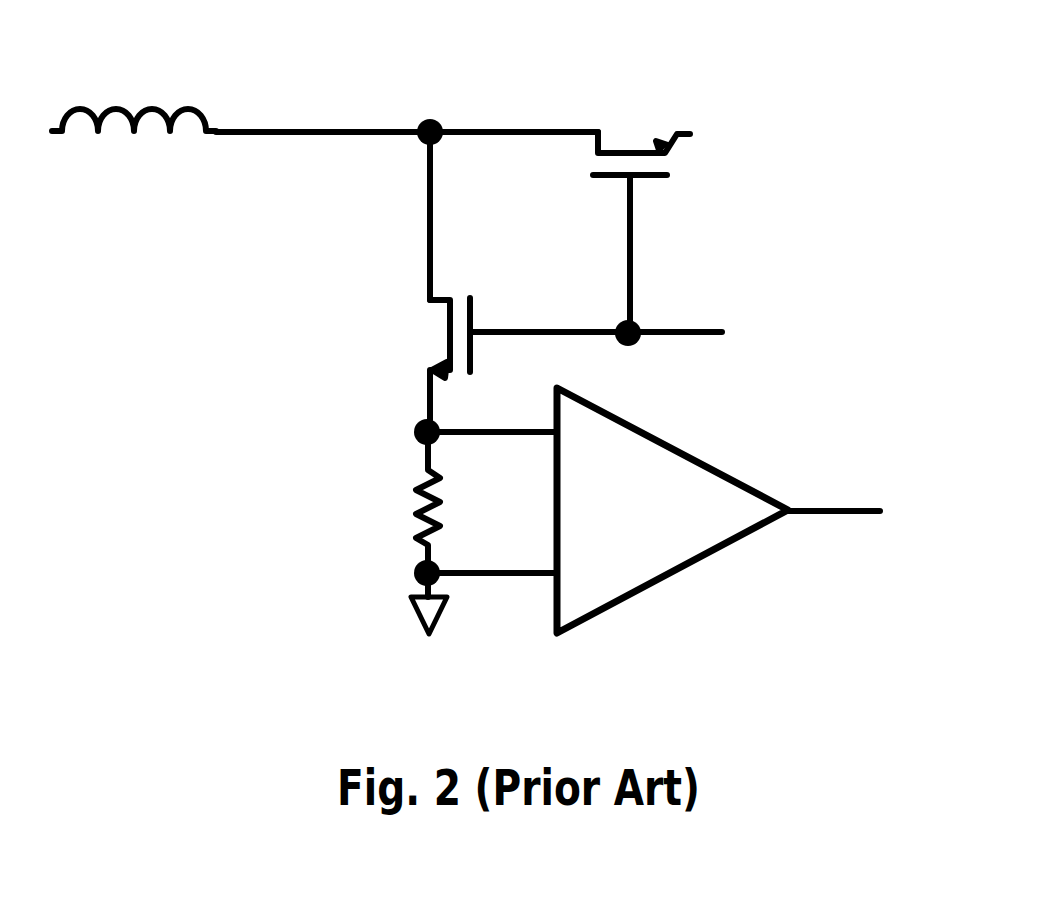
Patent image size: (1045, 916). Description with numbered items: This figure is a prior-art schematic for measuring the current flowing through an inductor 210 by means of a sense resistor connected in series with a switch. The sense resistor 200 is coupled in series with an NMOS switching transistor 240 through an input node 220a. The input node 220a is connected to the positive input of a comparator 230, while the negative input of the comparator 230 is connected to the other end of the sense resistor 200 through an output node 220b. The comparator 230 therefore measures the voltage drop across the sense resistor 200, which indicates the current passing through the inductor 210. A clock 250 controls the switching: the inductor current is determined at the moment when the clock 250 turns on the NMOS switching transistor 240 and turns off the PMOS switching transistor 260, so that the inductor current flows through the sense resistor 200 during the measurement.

The inductor 210 is at (152, 92).
The PMOS switching transistor 260 is at (622, 150).
The clock 250 is at (712, 277).
The NMOS switching transistor 240 is at (446, 330).
The input node 220a is at (437, 424).
The sense resistor 200 is at (418, 493).
The output node 220b is at (440, 582).
The comparator 230 is at (697, 460).